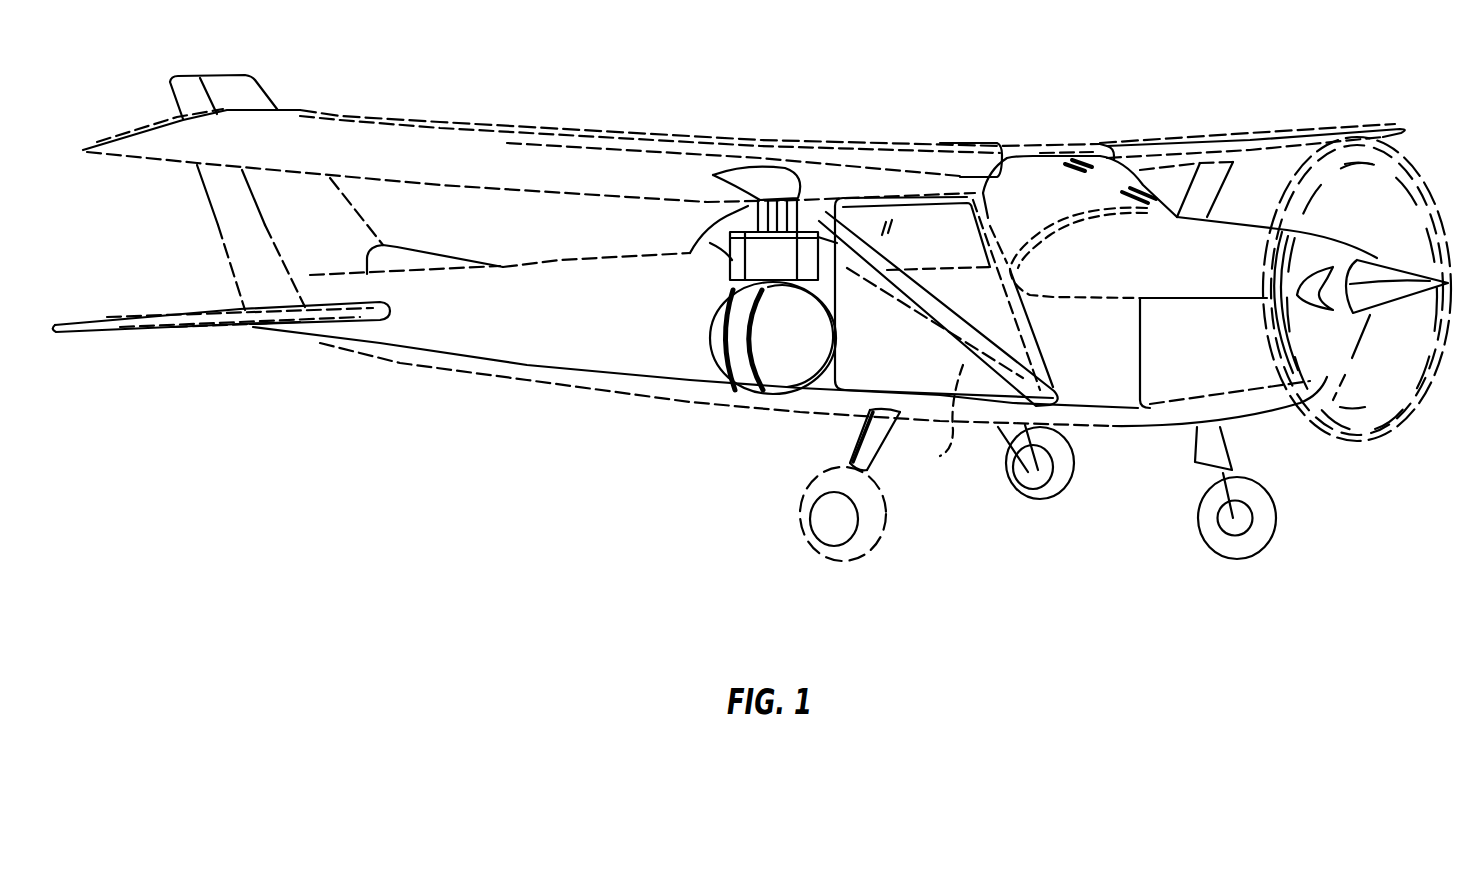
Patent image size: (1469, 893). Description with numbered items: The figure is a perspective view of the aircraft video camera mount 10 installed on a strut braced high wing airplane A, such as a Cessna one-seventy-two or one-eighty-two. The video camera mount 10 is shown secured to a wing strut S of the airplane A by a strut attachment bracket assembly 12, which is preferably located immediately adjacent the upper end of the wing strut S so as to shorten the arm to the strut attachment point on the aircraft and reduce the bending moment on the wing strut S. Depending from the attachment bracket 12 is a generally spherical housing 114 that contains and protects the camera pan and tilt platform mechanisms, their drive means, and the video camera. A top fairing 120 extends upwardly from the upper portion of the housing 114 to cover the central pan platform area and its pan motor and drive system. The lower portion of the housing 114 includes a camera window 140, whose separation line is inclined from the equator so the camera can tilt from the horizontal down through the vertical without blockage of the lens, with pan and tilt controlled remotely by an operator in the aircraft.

The aircraft video camera mount 10 is at (690, 446).
The strut attachment bracket assembly 12 is at (790, 222).
The housing 114 is at (843, 334).
The top fairing 120 is at (730, 265).
The camera window 140 is at (720, 325).
The wing strut S is at (939, 417).
The high wing airplane A is at (1025, 515).